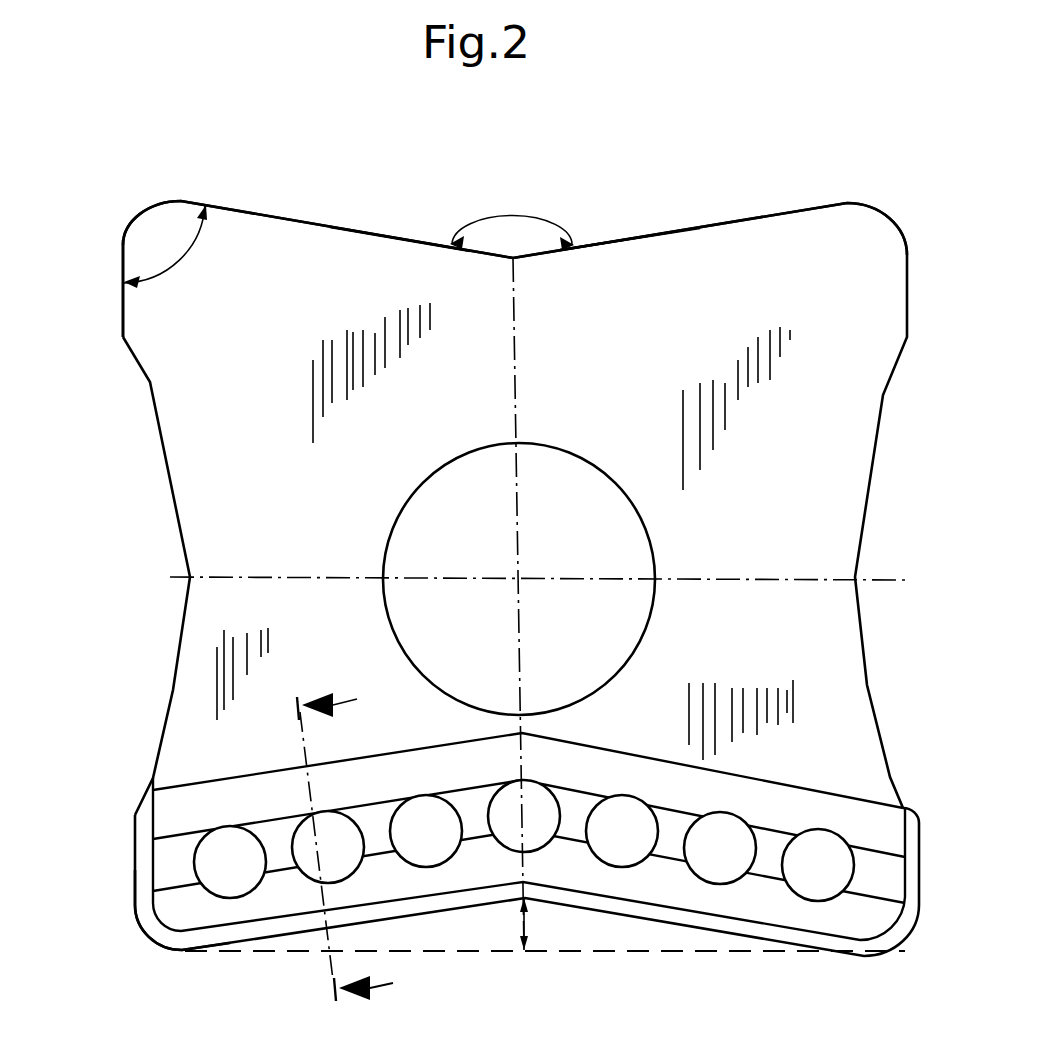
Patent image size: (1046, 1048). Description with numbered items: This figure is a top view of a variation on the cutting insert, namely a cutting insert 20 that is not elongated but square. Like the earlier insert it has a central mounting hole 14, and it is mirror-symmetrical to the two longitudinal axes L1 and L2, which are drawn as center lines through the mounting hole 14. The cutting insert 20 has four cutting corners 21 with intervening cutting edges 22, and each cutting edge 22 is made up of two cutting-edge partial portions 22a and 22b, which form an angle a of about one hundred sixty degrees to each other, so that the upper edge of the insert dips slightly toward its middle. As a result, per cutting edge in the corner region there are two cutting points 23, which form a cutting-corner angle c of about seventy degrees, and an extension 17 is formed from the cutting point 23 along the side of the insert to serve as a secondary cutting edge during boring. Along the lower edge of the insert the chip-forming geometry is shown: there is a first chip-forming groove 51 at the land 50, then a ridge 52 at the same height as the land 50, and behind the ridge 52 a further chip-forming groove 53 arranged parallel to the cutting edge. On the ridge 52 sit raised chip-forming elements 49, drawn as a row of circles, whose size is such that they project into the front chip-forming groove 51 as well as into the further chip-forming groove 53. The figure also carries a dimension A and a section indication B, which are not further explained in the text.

The mounting hole 14 is at (541, 633).
The extension 17 is at (122, 298).
The cutting insert 20 is at (717, 262).
The cutting corner 21 is at (877, 207).
The cutting edge 22 is at (320, 200).
The cutting-edge partial portion 22a is at (389, 236).
The cutting-edge partial portion 22b is at (630, 238).
The cutting point 23 is at (152, 190).
The chip-forming element 49 is at (728, 858).
The land 50 is at (276, 923).
The first chip-forming groove 51 is at (187, 924).
The ridge 52 is at (168, 873).
The further chip-forming groove 53 is at (172, 806).
The angle a is at (513, 215).
The cutting-corner angle c is at (179, 262).
The longitudinal axis L1 is at (516, 338).
The longitudinal axis L2 is at (318, 580).
The dimension A is at (521, 928).
The section line B- B is at (324, 850).